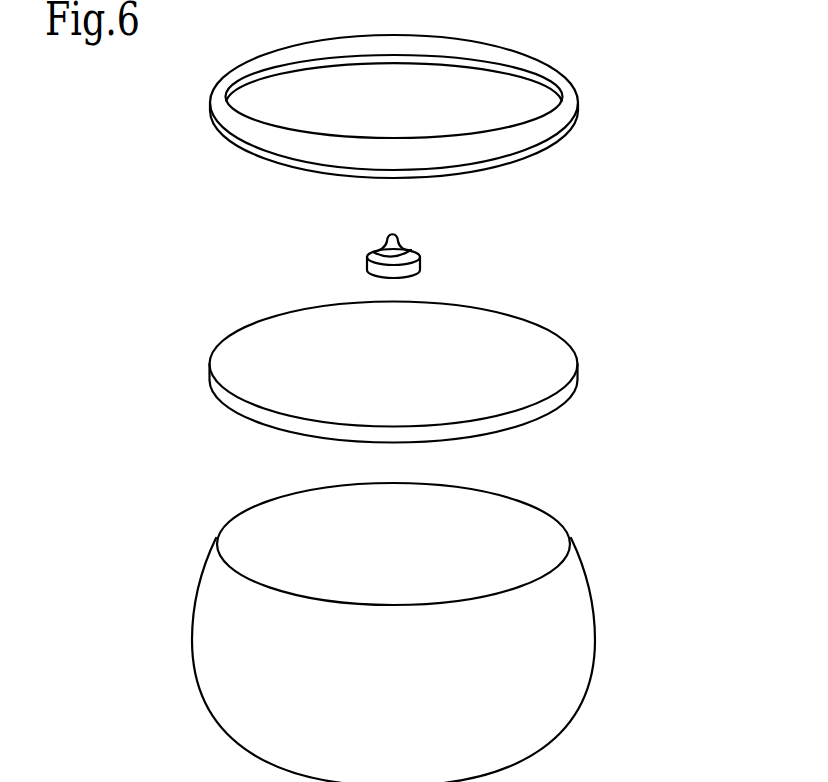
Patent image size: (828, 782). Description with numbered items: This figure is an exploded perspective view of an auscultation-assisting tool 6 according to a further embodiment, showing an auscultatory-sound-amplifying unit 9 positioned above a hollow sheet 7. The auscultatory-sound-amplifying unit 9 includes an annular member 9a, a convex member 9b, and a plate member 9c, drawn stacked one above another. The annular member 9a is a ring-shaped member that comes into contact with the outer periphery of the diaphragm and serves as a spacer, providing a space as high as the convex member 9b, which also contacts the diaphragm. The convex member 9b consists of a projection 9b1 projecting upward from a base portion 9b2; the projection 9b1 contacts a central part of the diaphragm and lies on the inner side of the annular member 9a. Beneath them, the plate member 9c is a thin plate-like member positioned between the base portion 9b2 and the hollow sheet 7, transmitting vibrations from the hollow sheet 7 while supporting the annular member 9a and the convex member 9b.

The auscultatory-sound-amplifying unit 9 is at (665, 62).
The annular member 9a is at (567, 85).
The convex member 9b is at (511, 234).
The projection 9b1 is at (401, 238).
The base portion 9b2 is at (420, 263).
The plate member 9c is at (577, 380).
The auscultation-assisting tool 6 is at (439, 632).
The hollow sheet 7 is at (585, 637).